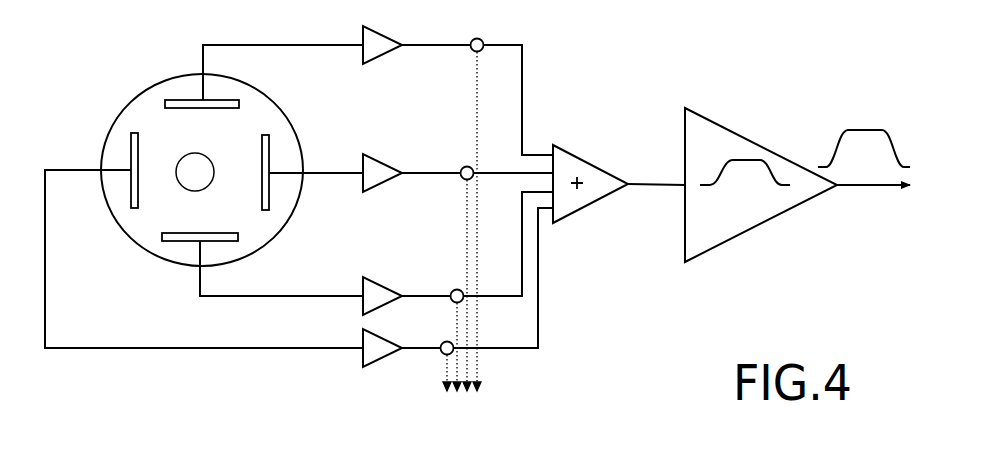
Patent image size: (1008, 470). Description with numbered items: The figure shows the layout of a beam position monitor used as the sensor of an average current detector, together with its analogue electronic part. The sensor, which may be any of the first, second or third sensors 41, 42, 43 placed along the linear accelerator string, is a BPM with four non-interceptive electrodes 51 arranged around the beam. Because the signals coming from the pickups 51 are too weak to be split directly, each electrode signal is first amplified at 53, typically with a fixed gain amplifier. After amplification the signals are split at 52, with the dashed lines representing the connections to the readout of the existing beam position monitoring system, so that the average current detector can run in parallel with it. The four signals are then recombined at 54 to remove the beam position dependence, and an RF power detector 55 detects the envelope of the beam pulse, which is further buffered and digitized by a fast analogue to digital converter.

The first sensor 41 is at (178, 133).
The second sensor 42 is at (178, 133).
The third sensor 43 is at (126, 86).
The BPM electrodes 51 is at (190, 108).
The splitting point 52 is at (483, 50).
The amplifier 53 is at (370, 65).
The recombination stage 54 is at (575, 148).
The RF power detector 55 is at (732, 128).